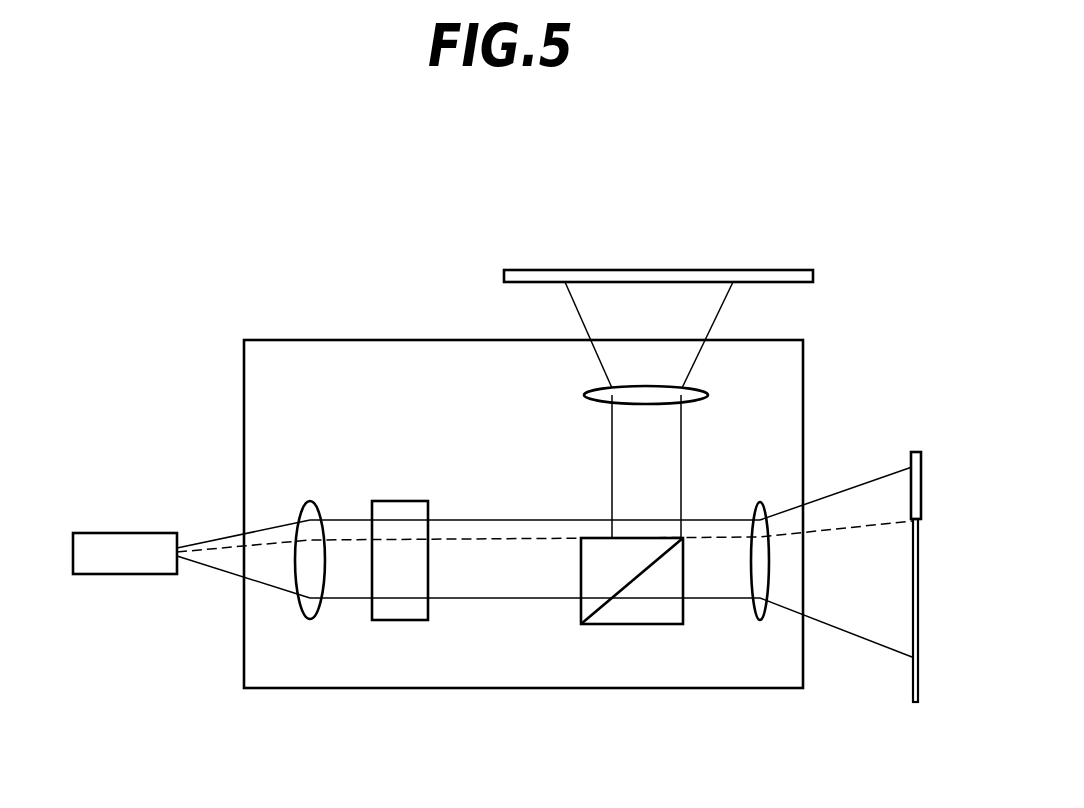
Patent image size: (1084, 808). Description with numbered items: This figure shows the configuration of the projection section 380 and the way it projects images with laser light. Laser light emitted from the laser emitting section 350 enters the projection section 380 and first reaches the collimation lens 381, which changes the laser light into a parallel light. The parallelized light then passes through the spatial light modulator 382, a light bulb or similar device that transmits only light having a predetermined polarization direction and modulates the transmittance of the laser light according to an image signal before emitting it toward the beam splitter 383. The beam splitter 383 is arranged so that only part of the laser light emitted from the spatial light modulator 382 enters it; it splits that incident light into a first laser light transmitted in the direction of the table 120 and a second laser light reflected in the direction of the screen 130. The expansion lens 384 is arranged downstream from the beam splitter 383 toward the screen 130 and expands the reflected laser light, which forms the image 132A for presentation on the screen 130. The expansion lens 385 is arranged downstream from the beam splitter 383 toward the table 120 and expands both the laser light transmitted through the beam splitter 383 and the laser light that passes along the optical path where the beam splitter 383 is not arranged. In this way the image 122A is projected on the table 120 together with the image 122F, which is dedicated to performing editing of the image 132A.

The table 120 is at (910, 683).
The image 122A is at (910, 565).
The image dedicated for editing 122F is at (915, 452).
The screen 130 is at (533, 270).
The image for presentation 132A is at (668, 270).
The laser emitting section 350 is at (123, 532).
The projection section 380 is at (367, 340).
The collimation lens 381 is at (308, 502).
The spatial light modulator 382 is at (402, 502).
The beam splitter 383 is at (602, 547).
The expansion lens 384 is at (587, 393).
The expansion lens 385 is at (760, 502).